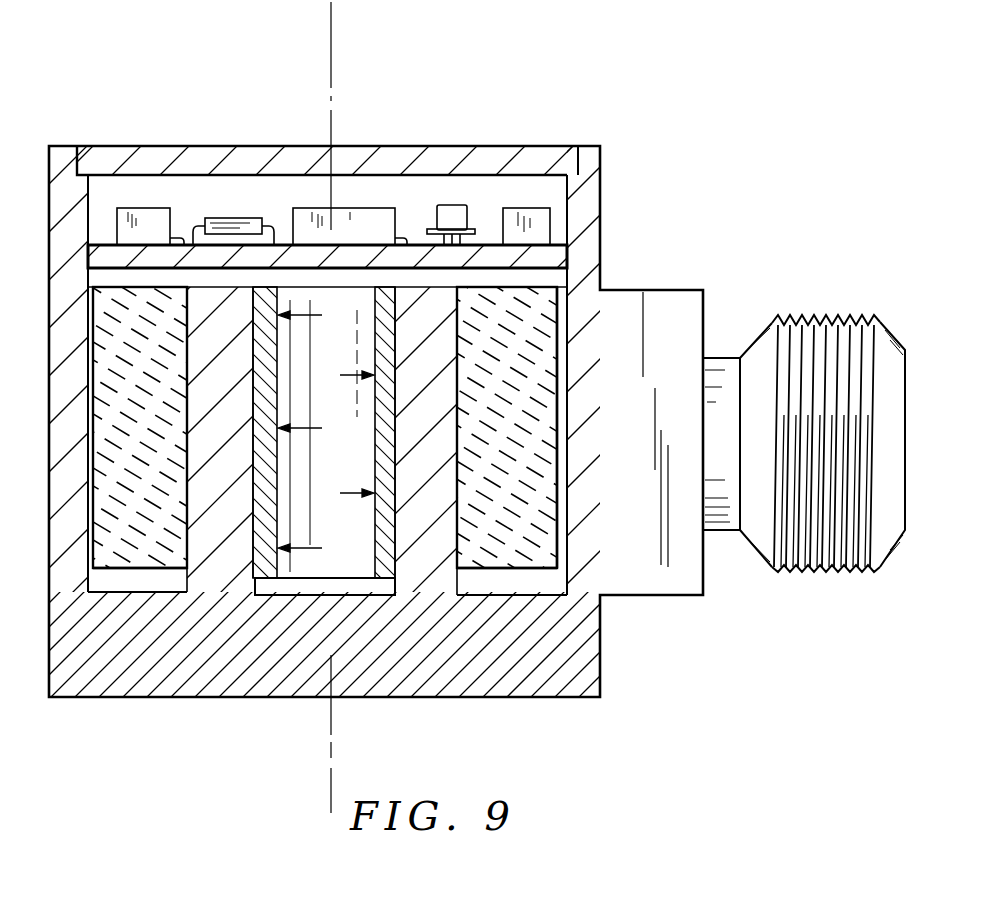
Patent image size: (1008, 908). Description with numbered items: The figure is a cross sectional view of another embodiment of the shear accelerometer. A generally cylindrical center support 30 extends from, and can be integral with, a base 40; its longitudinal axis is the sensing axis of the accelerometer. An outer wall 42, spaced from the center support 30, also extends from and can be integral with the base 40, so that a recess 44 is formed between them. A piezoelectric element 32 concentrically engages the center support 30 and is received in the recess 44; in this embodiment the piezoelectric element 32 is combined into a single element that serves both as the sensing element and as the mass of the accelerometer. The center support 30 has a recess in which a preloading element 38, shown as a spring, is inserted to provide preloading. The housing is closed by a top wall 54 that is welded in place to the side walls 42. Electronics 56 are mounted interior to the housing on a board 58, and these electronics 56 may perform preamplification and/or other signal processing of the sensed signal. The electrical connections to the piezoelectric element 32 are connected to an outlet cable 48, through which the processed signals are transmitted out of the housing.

The center support 30 is at (210, 540).
The piezoelectric element 32 is at (138, 507).
The preloading element 38 is at (378, 555).
The base 40 is at (478, 685).
The outer wall 42 is at (588, 203).
The recess 44 is at (560, 578).
The outlet cable 48 is at (835, 318).
The top wall 54 is at (368, 149).
The electronics 56 is at (405, 197).
The board 58 is at (540, 258).